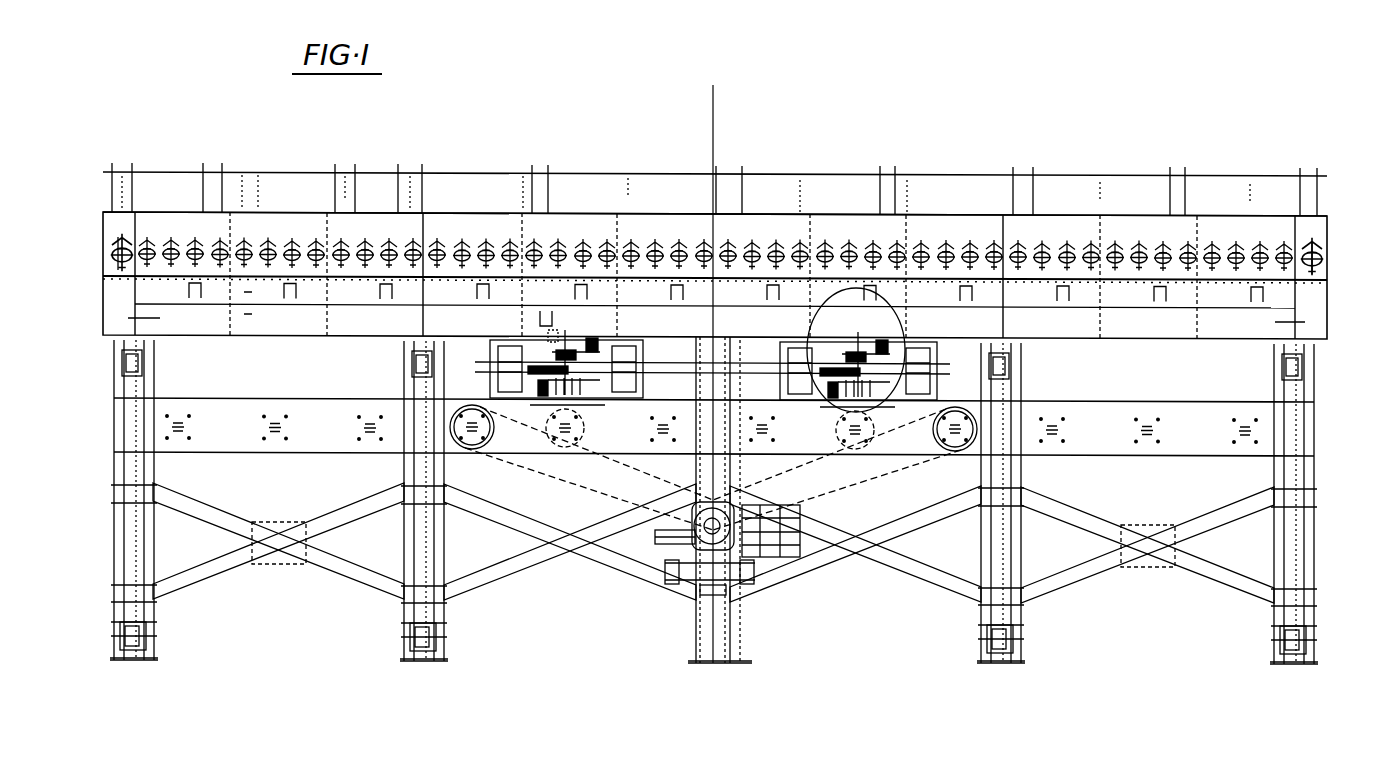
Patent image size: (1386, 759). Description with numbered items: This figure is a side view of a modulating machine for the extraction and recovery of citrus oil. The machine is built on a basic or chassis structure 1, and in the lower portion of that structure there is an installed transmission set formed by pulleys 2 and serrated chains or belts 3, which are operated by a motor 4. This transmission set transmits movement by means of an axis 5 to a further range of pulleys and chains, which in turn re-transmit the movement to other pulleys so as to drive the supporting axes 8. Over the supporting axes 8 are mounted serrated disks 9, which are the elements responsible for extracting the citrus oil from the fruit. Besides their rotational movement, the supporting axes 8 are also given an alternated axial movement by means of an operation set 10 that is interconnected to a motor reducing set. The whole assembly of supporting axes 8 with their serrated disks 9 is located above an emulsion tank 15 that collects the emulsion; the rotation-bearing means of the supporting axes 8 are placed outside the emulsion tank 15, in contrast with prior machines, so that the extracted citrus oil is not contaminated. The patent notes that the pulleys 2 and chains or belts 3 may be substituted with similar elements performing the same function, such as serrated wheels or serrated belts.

The chassis structure 1 is at (1305, 598).
The pulleys 2 is at (473, 450).
The serrated chains or belts 3 is at (550, 480).
The motor 4 is at (742, 540).
The axis 5 is at (499, 414).
The supporting axes 8 is at (1162, 246).
The serrated disks 9 is at (1076, 243).
The operation set 10 is at (855, 290).
The emulsion tank 15 is at (1235, 284).